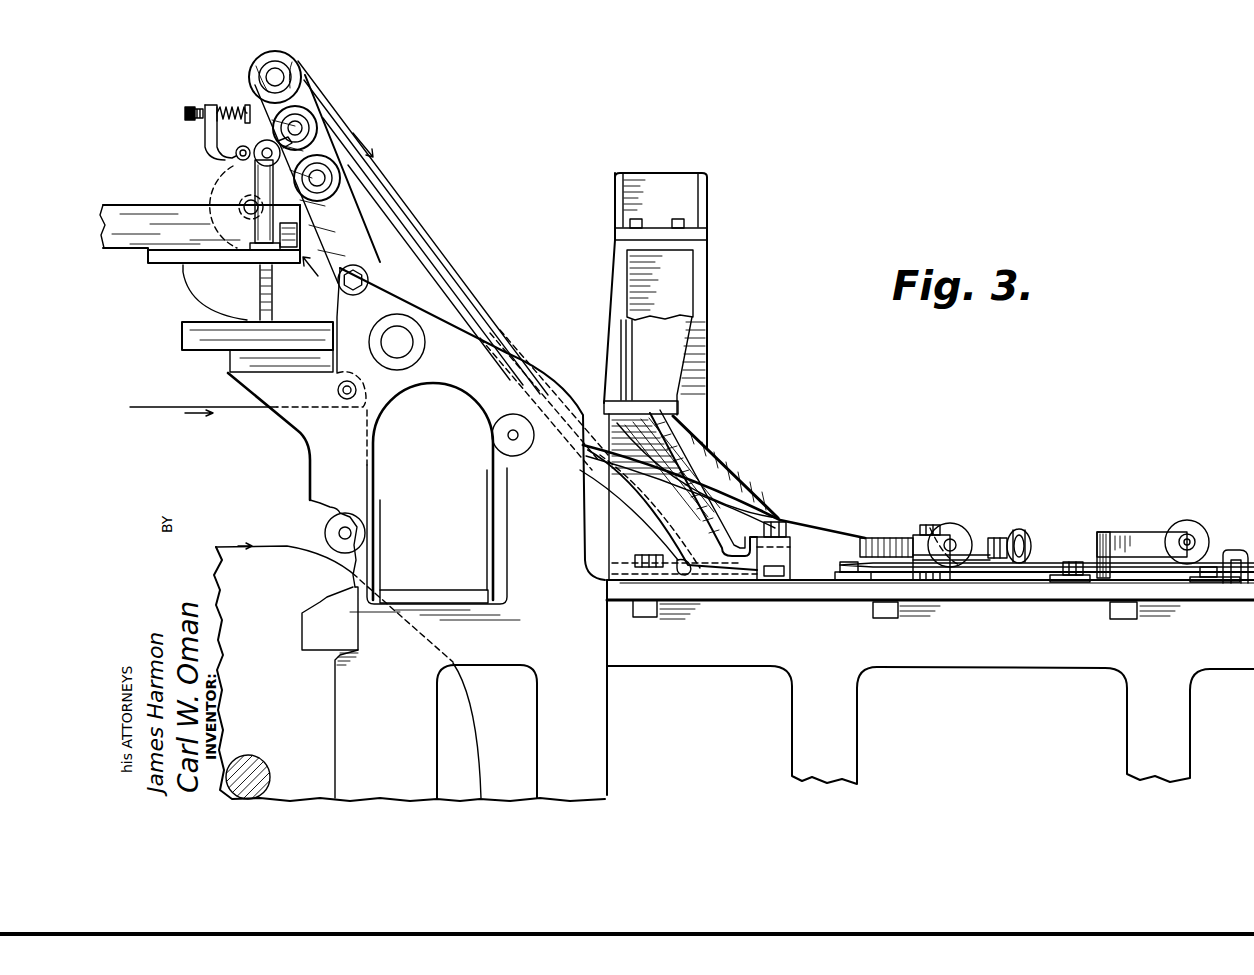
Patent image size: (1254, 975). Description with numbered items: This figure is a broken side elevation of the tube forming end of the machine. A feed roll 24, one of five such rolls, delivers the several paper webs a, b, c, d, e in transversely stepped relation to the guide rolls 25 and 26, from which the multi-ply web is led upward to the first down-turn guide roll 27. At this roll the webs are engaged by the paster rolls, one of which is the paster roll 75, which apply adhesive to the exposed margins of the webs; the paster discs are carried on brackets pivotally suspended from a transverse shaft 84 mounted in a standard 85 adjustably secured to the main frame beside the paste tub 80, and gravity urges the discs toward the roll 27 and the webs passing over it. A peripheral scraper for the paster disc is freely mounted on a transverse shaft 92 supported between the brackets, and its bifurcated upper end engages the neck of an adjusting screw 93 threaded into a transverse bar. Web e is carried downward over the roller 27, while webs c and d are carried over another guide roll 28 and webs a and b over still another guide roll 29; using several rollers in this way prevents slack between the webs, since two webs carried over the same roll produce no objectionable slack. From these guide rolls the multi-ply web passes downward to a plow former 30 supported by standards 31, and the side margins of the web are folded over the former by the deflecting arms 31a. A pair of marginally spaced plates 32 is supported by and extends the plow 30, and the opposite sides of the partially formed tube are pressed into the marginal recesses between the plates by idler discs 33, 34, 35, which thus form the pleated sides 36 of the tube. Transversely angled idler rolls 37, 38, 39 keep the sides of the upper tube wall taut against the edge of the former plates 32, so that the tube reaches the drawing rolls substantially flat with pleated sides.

The feed roll 24 is at (409, 674).
The guide roll 25 is at (335, 522).
The guide roll 26 is at (330, 393).
The first down-turn guide roll 27 is at (340, 182).
The guide roll 28 is at (320, 122).
The guide roll 29 is at (270, 60).
The plow former 30 is at (740, 478).
The standard 31 is at (680, 296).
The deflecting arm 31a is at (690, 477).
The marginally spaced plate 32 is at (690, 578).
The idler disc 33 is at (745, 580).
The idler disc 34 is at (960, 583).
The idler disc 35 is at (1247, 586).
The pleated side 36 is at (847, 581).
The transversely angled idler roll 37 is at (948, 528).
The transversely angled idler roll 38 is at (1022, 531).
The transversely angled idler roll 39 is at (1188, 528).
The paster roll 75 is at (252, 170).
The paste tub 80 is at (200, 234).
The transverse shaft 84 is at (254, 157).
The standard 85 is at (256, 210).
The transverse shaft 92 is at (236, 153).
The adjusting screw 93 is at (185, 115).
The paper web a is at (402, 208).
The paper web b is at (423, 227).
The paper web c is at (431, 248).
The paper web d is at (438, 259).
The paper web e is at (443, 292).